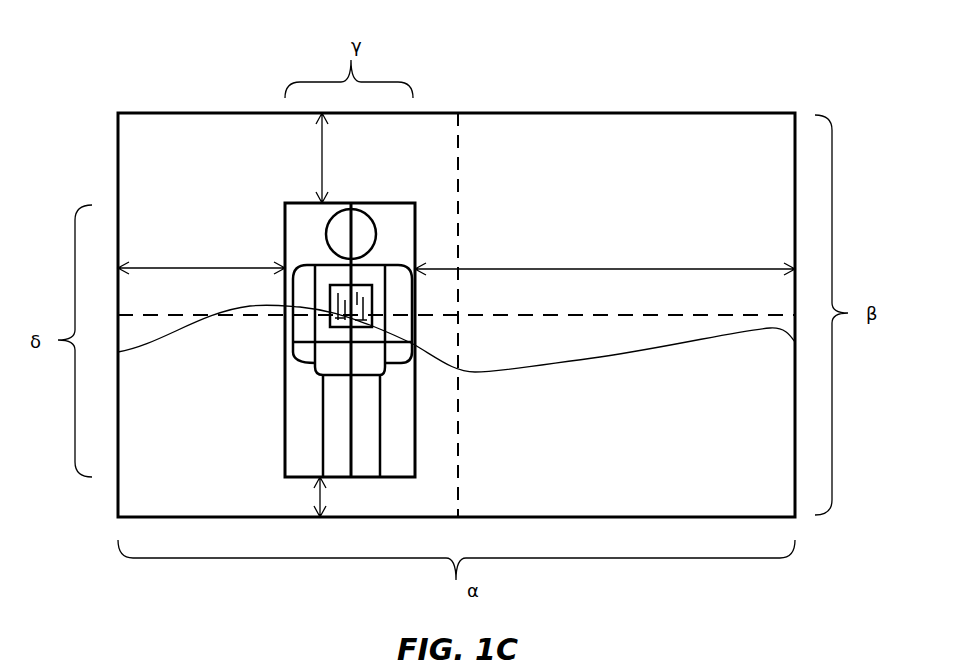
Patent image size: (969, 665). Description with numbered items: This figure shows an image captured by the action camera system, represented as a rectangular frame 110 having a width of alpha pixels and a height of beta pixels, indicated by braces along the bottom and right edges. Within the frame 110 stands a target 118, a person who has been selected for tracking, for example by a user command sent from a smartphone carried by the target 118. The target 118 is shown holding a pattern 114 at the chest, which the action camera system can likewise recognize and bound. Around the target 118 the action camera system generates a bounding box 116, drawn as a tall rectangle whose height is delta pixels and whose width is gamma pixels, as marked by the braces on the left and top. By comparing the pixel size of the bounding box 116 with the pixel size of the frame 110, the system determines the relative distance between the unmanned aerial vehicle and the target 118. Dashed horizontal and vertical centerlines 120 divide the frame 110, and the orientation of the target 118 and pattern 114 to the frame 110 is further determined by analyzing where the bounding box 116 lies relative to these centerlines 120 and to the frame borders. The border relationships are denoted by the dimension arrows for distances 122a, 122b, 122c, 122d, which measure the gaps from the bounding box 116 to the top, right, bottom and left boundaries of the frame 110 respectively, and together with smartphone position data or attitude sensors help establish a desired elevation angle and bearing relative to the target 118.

The frame 110 is at (128, 62).
The pattern 114 is at (330, 305).
The bounding box 116 is at (284, 377).
The target 118 is at (376, 232).
The centerlines 120 is at (556, 324).
The distance from bounding box to frame boundary 122a is at (320, 175).
The distance from bounding box to frame boundary 122b is at (622, 269).
The distance from bounding box to frame boundary 122c is at (317, 510).
The distance from bounding box to frame boundary 122d is at (200, 268).